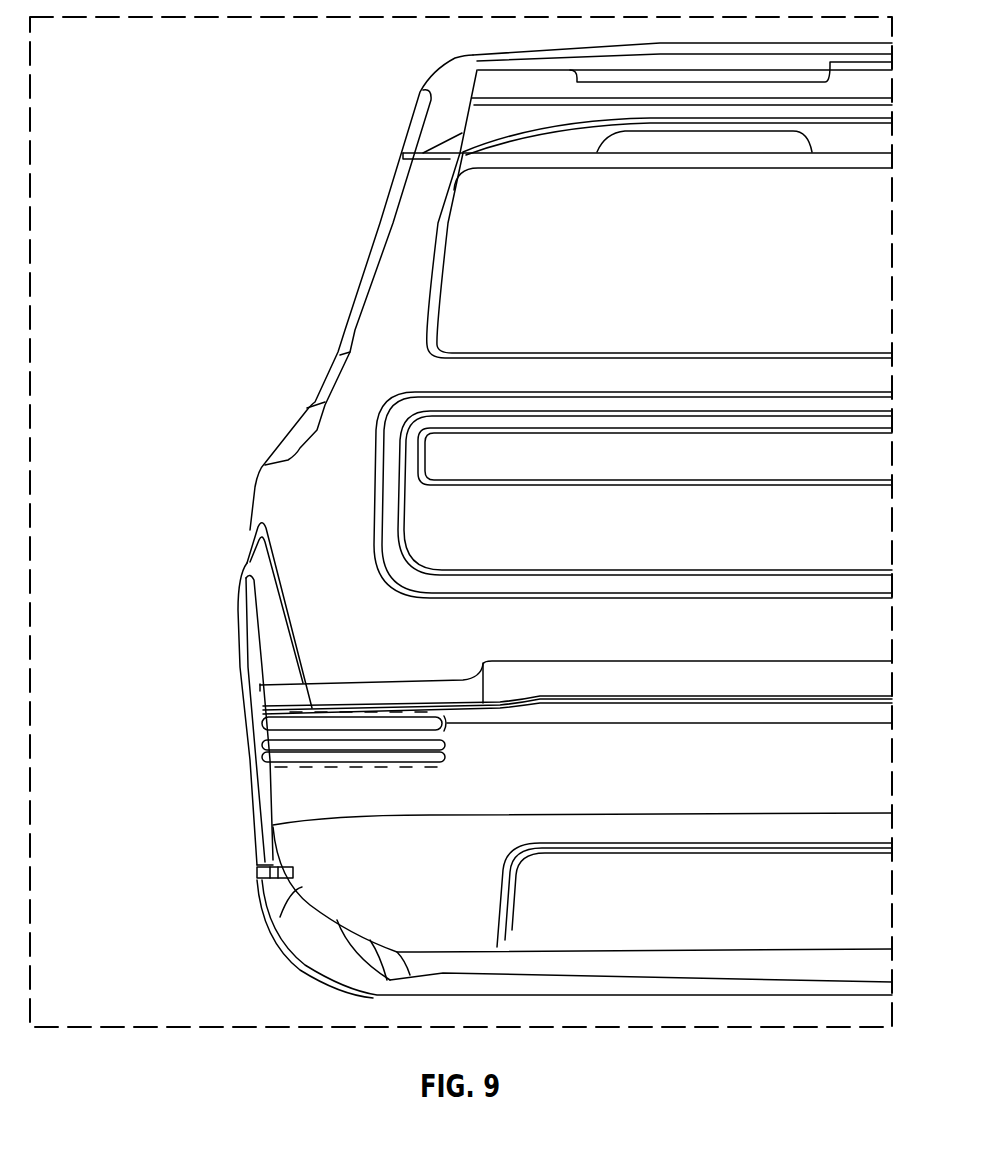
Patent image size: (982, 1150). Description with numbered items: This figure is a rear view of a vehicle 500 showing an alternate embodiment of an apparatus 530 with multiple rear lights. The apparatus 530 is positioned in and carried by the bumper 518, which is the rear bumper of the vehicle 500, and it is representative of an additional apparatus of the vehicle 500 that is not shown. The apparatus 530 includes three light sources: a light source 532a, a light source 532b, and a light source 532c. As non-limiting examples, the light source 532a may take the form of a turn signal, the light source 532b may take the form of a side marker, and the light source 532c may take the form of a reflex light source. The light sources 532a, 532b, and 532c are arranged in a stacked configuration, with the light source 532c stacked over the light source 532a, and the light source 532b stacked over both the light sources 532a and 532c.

The vehicle 500 is at (350, 143).
The bumper 518 is at (490, 860).
The apparatus 530 is at (233, 685).
The light source 532a is at (260, 755).
The light source 532b is at (260, 722).
The light source 532c is at (260, 745).